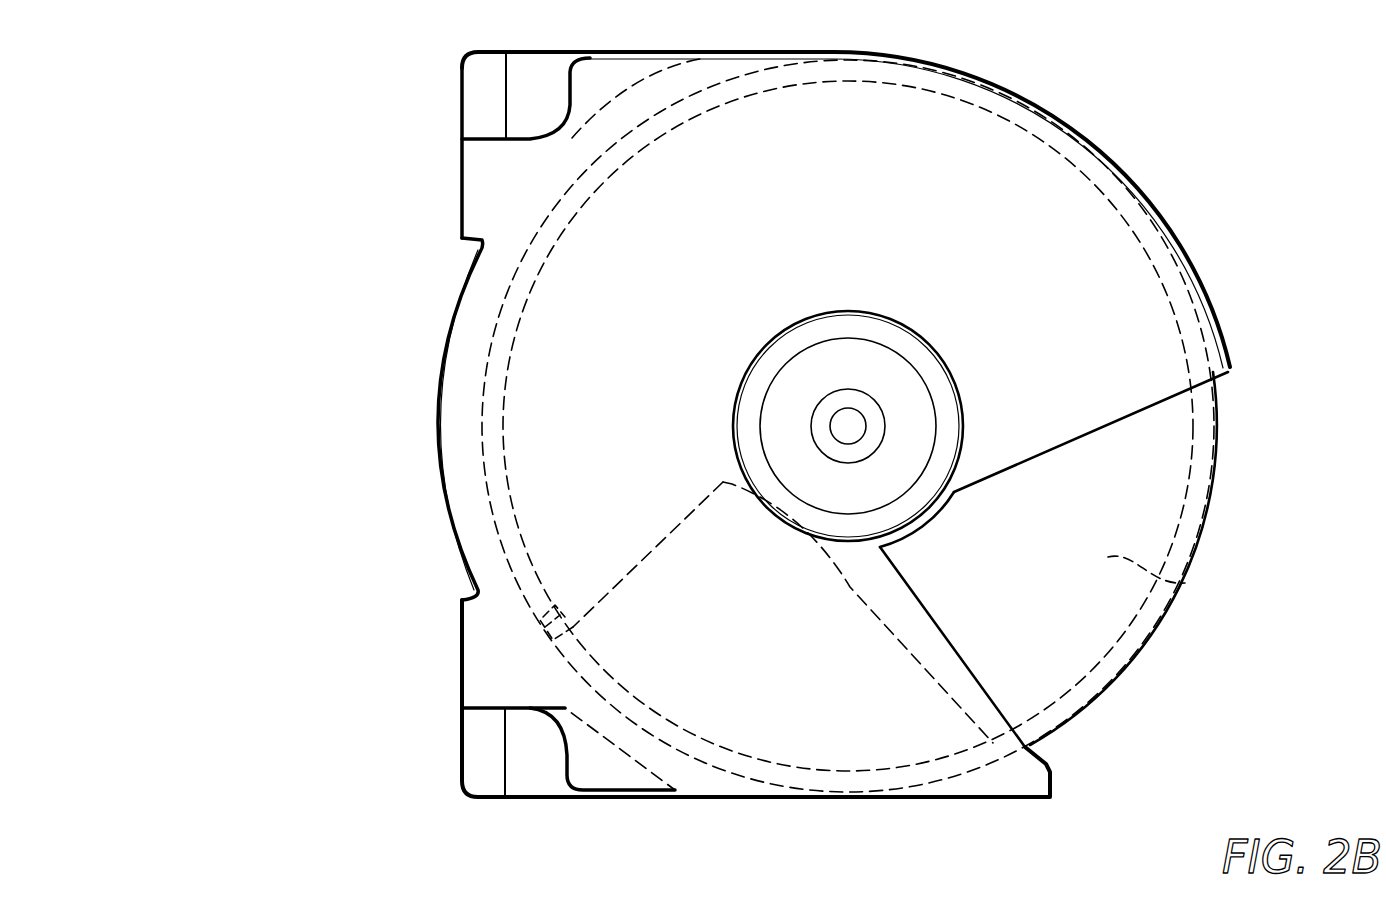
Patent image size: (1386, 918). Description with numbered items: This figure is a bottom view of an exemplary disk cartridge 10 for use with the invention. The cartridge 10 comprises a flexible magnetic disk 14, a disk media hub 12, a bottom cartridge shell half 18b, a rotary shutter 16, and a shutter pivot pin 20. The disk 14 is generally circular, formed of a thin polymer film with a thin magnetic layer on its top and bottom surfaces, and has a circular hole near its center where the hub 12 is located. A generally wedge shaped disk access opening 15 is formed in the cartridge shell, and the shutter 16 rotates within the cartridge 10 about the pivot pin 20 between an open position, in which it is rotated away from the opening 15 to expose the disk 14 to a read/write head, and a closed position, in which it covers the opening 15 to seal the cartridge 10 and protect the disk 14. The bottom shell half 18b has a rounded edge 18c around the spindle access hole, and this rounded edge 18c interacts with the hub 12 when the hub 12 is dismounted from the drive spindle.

The cartridge 10 is at (228, 769).
The disk media hub 12 is at (775, 357).
The flexible magnetic disk 14 is at (1185, 583).
The disk access opening 15 is at (1257, 373).
The rotary shutter 16 is at (1217, 453).
The bottom cartridge shell half 18b is at (680, 768).
The rounded edge 18c is at (843, 312).
The shutter pivot pin 20 is at (858, 423).